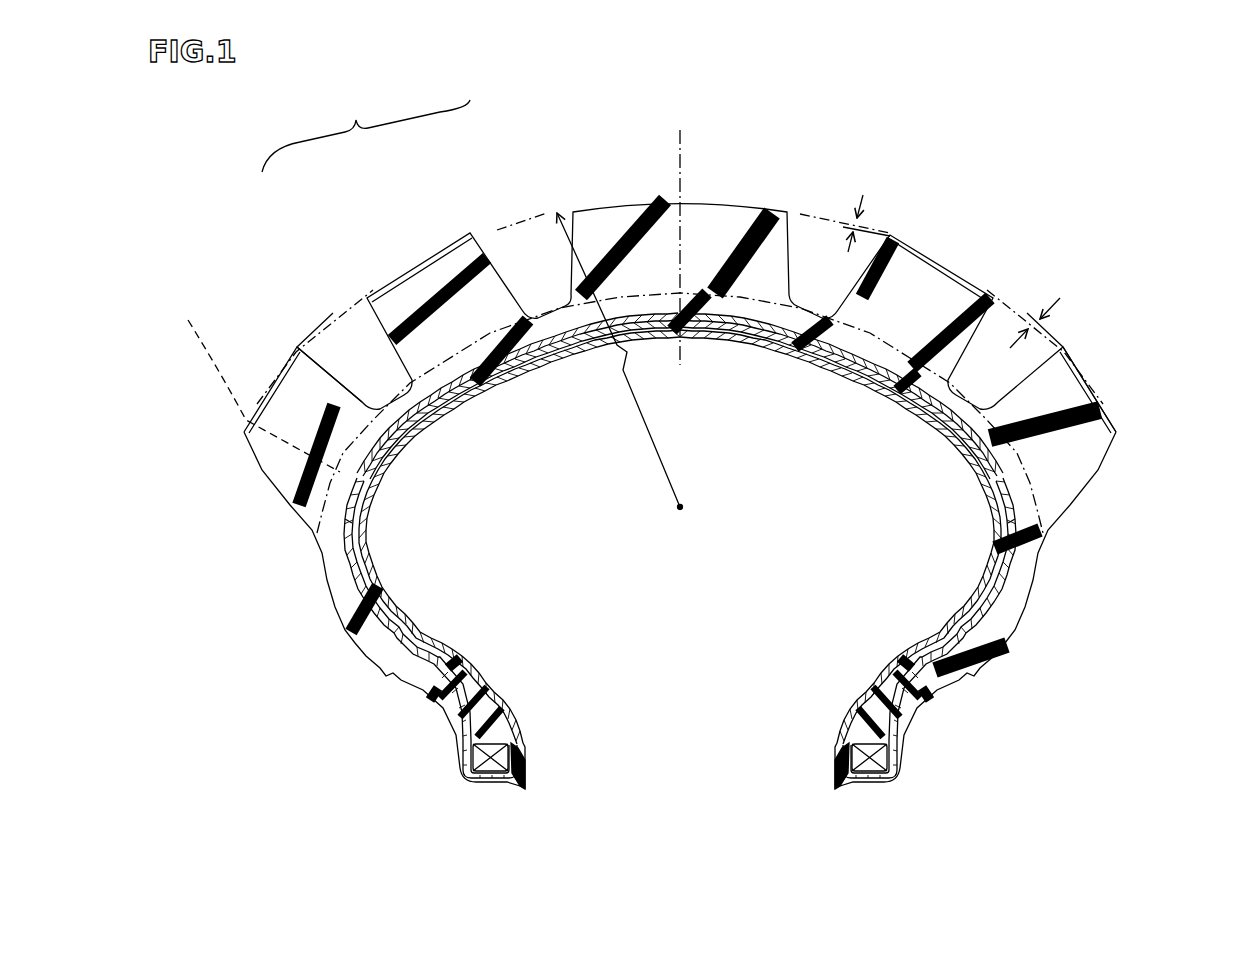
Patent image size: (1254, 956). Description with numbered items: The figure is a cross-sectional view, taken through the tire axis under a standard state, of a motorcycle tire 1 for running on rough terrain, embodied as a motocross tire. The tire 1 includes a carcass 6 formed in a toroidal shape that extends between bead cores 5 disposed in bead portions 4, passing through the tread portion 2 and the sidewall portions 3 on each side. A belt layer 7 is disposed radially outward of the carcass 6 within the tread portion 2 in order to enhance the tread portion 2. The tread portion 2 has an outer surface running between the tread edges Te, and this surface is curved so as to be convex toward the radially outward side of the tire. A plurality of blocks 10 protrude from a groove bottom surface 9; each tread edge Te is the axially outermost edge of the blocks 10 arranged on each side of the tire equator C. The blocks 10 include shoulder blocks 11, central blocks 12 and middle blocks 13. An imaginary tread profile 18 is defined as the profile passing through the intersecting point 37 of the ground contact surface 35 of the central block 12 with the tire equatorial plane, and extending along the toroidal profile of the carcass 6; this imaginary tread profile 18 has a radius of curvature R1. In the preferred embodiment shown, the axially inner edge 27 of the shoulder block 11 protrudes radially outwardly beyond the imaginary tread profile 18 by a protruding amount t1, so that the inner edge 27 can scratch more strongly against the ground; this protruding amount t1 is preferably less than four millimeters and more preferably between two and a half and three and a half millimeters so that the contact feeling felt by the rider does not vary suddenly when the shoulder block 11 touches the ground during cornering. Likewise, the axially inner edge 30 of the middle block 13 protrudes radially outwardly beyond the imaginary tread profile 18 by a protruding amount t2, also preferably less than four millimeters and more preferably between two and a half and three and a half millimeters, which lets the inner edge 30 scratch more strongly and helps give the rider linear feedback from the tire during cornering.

The motorcycle tire 1 is at (950, 152).
The tread portion 2 is at (729, 195).
The sidewall portions 3 is at (328, 622).
The bead portions 4 is at (536, 745).
The bead cores 5 is at (478, 757).
The carcass 6 is at (843, 354).
The belt layer 7 is at (727, 322).
The groove bottom surface 9 is at (257, 382).
The blocks 10 is at (366, 132).
The shoulder block 11 is at (279, 358).
The central block 12 is at (607, 201).
The middle block 13 is at (412, 256).
The imaginary tread profile 18 is at (277, 368).
The axially inner edge of the shoulder block 27 is at (1036, 390).
The axially inner edge of the middle block 30 is at (890, 233).
The ground contact surface of the central block 35 is at (758, 198).
The intersecting point 37 is at (668, 197).
The radius of curvature of the imaginary tread profile R1 is at (620, 361).
The tire equator C is at (685, 247).
The protruding amount of the axially inner edge of the shoulder block t1 is at (1028, 310).
The protruding amount of the axially inner edge of the middle block t2 is at (853, 222).
The tread edge Te is at (242, 430).